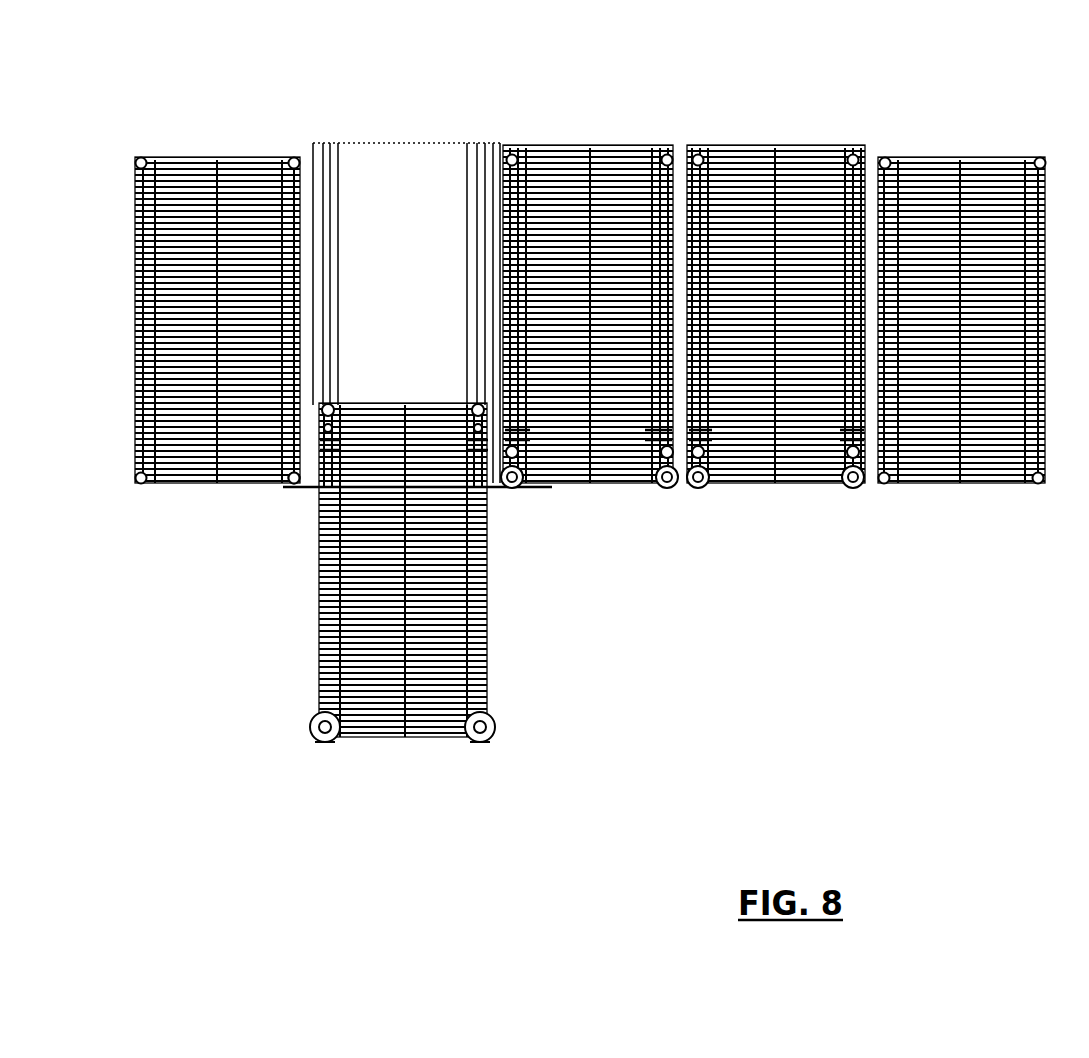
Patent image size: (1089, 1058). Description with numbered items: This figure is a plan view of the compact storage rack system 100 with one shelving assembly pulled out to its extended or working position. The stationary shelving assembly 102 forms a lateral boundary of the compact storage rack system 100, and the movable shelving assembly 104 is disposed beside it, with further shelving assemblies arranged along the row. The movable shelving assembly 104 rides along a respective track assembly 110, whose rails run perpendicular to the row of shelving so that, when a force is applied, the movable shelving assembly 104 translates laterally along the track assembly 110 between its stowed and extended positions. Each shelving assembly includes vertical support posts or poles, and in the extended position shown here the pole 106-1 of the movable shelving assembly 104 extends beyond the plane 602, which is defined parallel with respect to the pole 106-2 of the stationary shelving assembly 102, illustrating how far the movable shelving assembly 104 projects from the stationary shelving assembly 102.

The compact storage rack system 100 is at (457, 70).
The stationary shelving assembly 102 is at (223, 153).
The movable shelving assembly 104 is at (330, 635).
The pole 106-1 is at (322, 730).
The pole 106-2 is at (287, 482).
The track assembly 110 is at (340, 268).
The plane 602 is at (297, 488).